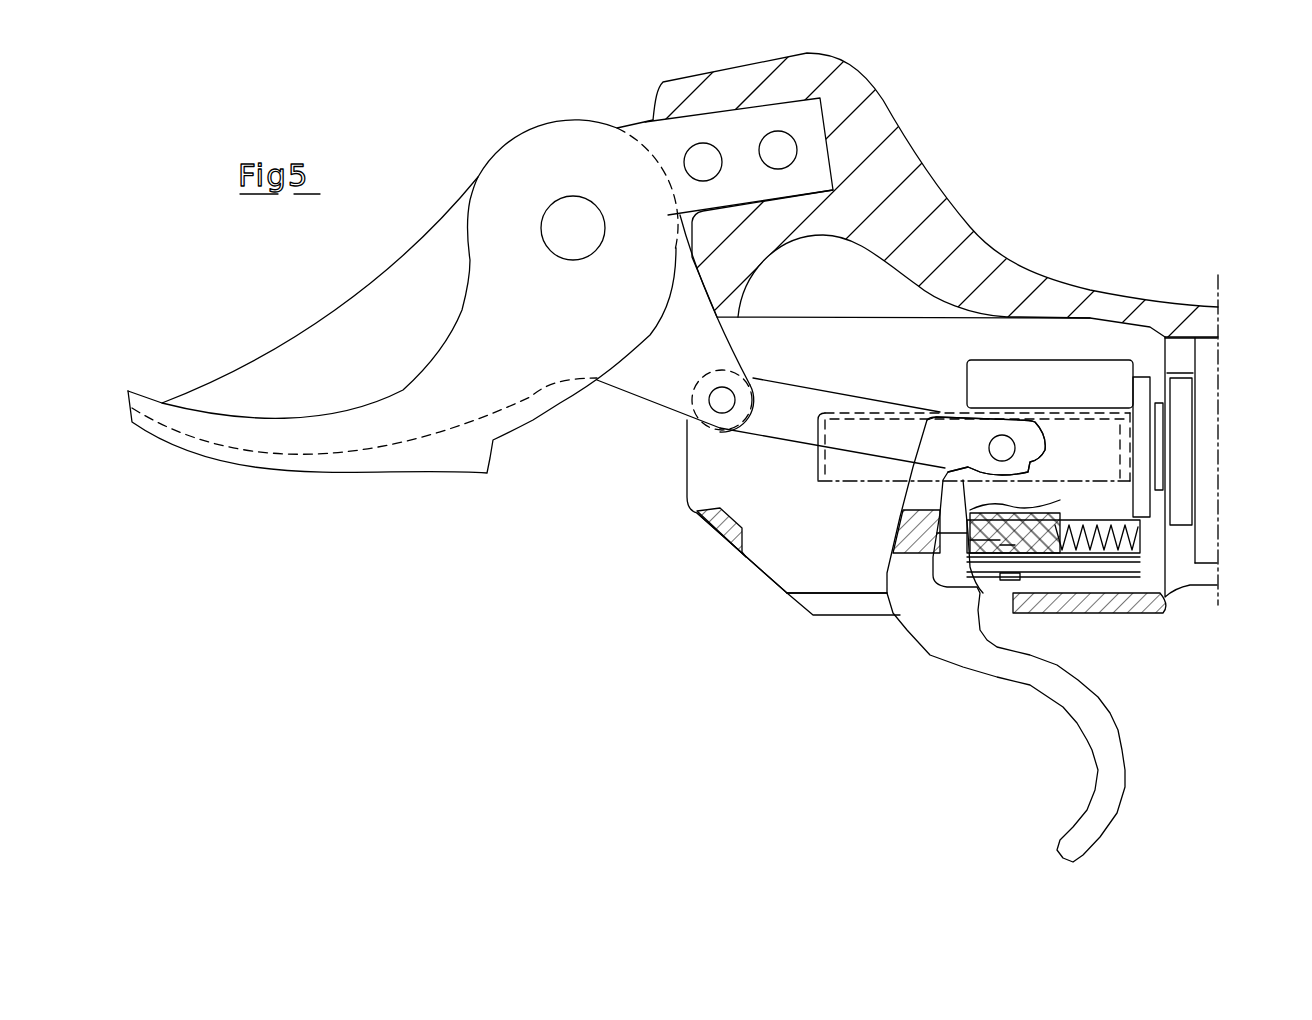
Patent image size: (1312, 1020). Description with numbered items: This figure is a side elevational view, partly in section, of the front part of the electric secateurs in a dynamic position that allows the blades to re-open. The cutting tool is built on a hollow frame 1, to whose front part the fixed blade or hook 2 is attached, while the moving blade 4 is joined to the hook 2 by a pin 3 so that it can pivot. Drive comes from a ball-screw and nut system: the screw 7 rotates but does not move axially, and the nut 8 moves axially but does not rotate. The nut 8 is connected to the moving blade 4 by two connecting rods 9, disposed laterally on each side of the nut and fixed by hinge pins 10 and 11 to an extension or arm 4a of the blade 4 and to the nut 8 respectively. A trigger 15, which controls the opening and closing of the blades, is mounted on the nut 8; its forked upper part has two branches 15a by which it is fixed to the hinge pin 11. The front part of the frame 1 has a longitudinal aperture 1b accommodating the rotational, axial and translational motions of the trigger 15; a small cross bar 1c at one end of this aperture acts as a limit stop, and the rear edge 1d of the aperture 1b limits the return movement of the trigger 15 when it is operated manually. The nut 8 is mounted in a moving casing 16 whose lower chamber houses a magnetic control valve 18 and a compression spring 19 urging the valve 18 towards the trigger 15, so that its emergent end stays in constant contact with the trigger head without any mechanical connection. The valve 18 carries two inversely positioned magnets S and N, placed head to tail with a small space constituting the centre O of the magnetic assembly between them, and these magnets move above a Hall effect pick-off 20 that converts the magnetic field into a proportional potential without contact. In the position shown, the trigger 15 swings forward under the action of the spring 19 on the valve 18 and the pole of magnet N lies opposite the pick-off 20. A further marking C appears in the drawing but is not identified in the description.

The hollow frame 1 is at (953, 210).
The longitudinal aperture 1b is at (837, 639).
The cross bar 1c is at (713, 540).
The rear edge of the aperture 1d is at (1007, 613).
The fixed blade or hook 2 is at (448, 417).
The pin 3 is at (558, 263).
The moving blade 4 is at (352, 503).
The extension or arm of the blade 4a is at (638, 377).
The screw 7 is at (853, 503).
The nut 8 is at (955, 560).
The connecting rods 9 is at (797, 460).
The hinge pin 10 is at (697, 440).
The hinge pin 11 is at (1002, 435).
The trigger 15 is at (1112, 780).
The branches 15a is at (938, 450).
The moving casing 16 is at (1080, 375).
The magnetic control valve 18 is at (918, 657).
The compression spring 19 is at (1137, 563).
The pick-off 20 is at (1010, 545).
The magnet N is at (1020, 565).
The compression spring C is at (1070, 580).
The centre of the magnetic assembly O is at (1110, 590).
The magnet S is at (1000, 540).